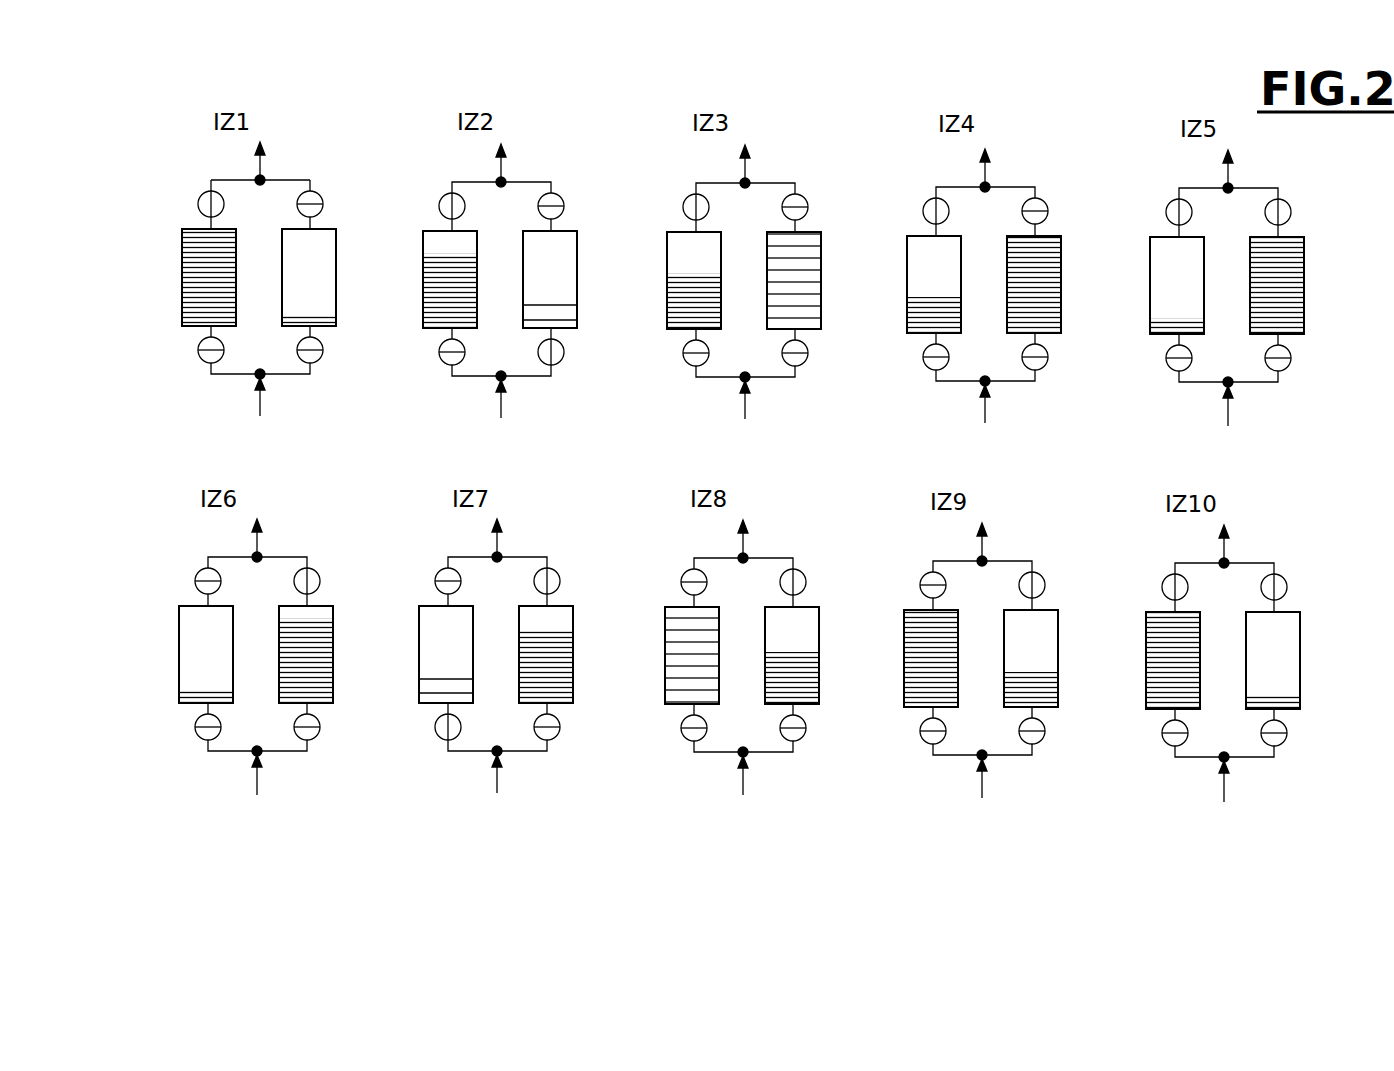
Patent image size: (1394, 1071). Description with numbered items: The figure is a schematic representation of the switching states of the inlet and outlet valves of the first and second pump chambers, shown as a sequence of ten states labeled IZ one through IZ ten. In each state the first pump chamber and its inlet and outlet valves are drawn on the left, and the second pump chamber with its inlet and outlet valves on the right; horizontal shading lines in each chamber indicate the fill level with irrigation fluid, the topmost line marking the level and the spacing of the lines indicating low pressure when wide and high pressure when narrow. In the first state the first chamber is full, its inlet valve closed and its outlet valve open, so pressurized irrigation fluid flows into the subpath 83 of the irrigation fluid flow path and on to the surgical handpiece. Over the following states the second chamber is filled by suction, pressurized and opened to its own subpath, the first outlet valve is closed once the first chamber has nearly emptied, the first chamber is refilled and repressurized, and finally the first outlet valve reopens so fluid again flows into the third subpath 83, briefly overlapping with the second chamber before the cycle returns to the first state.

The third subpath 83 is at (225, 180).